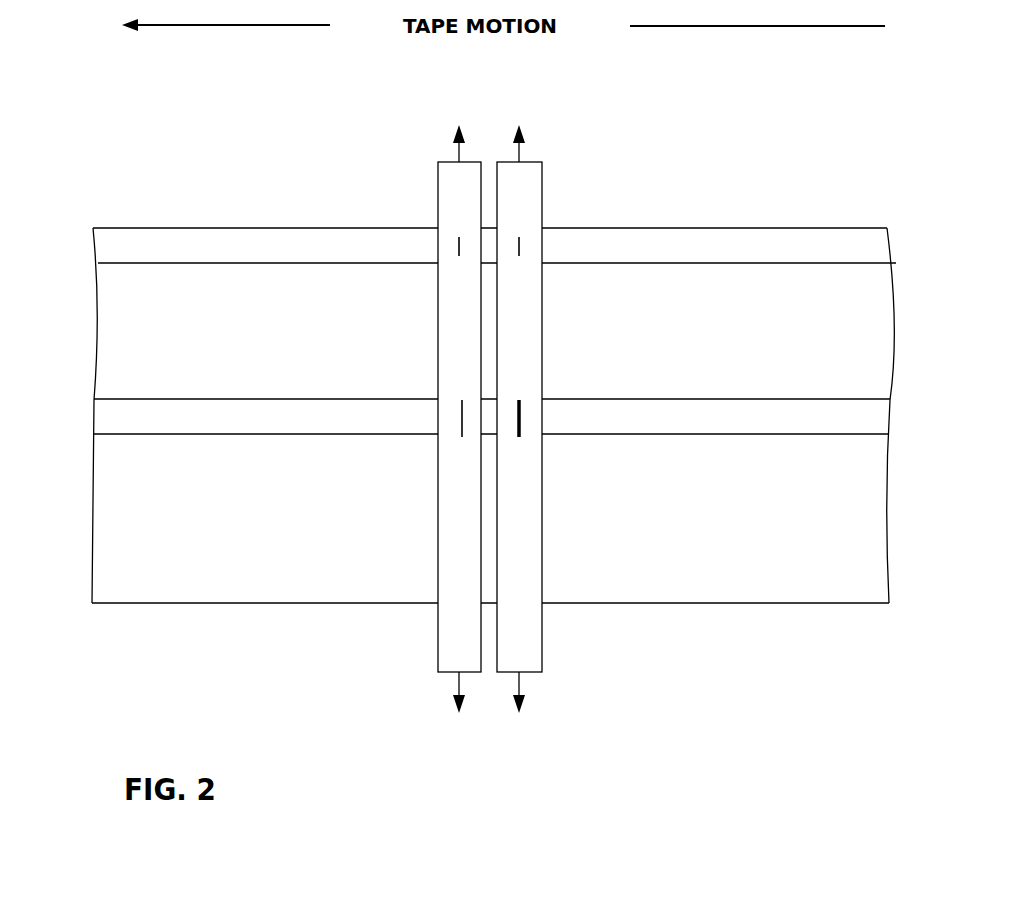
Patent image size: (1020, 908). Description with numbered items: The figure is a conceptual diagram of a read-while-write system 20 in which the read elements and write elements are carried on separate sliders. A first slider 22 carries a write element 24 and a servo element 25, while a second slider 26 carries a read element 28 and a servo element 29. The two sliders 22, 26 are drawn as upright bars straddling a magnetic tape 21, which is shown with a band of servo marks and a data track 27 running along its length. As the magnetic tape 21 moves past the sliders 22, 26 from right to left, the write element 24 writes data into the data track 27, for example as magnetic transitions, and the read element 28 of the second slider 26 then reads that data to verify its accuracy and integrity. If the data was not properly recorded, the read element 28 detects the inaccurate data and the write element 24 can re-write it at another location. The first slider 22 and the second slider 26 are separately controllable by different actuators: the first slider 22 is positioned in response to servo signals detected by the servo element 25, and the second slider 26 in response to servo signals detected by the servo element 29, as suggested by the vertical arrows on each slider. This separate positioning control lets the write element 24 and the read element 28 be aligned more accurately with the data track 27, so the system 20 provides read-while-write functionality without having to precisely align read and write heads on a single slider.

The read-while-write system 20 is at (602, 692).
The magnetic tape 21 is at (155, 585).
The first slider 22 is at (515, 643).
The write element 24 is at (521, 416).
The servo element 25 is at (518, 250).
The second slider 26 is at (448, 640).
The data track 27 is at (137, 416).
The read element 28 is at (462, 425).
The servo element 29 is at (455, 248).